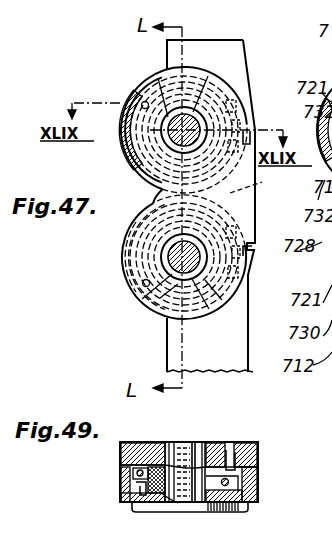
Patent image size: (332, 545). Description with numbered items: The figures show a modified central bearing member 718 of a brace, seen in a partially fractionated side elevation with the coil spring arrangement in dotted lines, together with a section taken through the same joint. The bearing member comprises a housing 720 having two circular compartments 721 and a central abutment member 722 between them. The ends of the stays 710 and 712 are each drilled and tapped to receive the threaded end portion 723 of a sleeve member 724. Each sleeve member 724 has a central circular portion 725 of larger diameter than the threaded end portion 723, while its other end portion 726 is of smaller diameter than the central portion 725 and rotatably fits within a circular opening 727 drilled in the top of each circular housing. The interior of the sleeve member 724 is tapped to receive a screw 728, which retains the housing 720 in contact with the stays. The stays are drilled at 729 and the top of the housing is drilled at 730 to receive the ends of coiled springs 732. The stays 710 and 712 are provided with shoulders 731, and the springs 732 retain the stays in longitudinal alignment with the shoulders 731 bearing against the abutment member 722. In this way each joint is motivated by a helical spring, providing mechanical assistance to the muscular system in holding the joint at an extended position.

In FIG. 47, the stay 710 is at (244, 42).
In FIG. 49, the stay 710 is at (133, 455).
In FIG. 47, the stay 712 is at (180, 348).
In FIG. 47, the central bearing member 718 is at (254, 231).
In FIG. 49, the central bearing member 718 is at (251, 503).
In FIG. 47, the housing 720 is at (157, 190).
In FIG. 49, the housing 720 is at (258, 486).
In FIG. 47, the circular compartment 721 is at (147, 84).
In FIG. 49, the circular compartment 721 is at (130, 480).
In FIG. 47, the central abutment member 722 is at (254, 192).
In FIG. 49, the threaded end portion 723 is at (156, 452).
In FIG. 49, the sleeve member 724 is at (216, 446).
In FIG. 47, the central circular portion 725 is at (184, 193).
In FIG. 49, the central circular portion 725 is at (175, 504).
In FIG. 47, the end portion 726 is at (190, 108).
In FIG. 49, the end portion 726 is at (222, 512).
In FIG. 49, the circular opening 727 is at (150, 500).
In FIG. 47, the screw 728 is at (203, 112).
In FIG. 49, the screw 728 is at (186, 446).
In FIG. 49, the drilled hole in stay 729 is at (238, 449).
In FIG. 47, the drilled hole in housing top 730 is at (141, 285).
In FIG. 49, the drilled hole in housing top 730 is at (130, 497).
In FIG. 47, the shoulder 731 is at (250, 132).
In FIG. 47, the coiled spring 732 is at (130, 145).
In FIG. 49, the coiled spring 732 is at (242, 472).